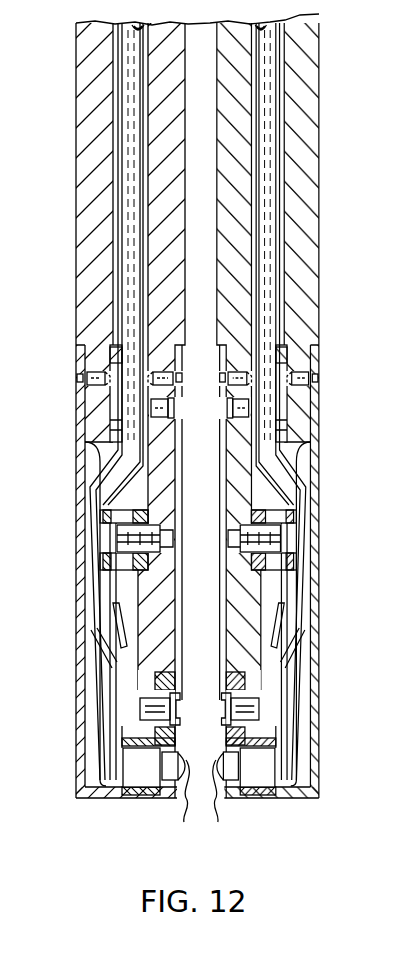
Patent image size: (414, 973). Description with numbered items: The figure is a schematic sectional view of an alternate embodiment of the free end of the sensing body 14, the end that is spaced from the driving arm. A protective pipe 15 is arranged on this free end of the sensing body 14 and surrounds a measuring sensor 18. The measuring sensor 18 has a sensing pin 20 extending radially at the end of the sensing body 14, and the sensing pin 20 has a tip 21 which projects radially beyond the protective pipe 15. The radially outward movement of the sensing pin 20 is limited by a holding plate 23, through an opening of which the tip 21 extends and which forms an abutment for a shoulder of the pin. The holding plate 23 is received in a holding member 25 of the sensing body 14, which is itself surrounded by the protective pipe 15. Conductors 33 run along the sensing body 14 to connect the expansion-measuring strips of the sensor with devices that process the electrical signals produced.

The sensing body 14 is at (76, 442).
The protective pipe 15 is at (76, 487).
The measuring sensor 18 is at (112, 660).
The sensing pin 20 is at (140, 768).
The tip 21 is at (200, 802).
The holding plate 23 is at (155, 690).
The holding member 25 is at (157, 588).
The conductors 33 is at (133, 228).